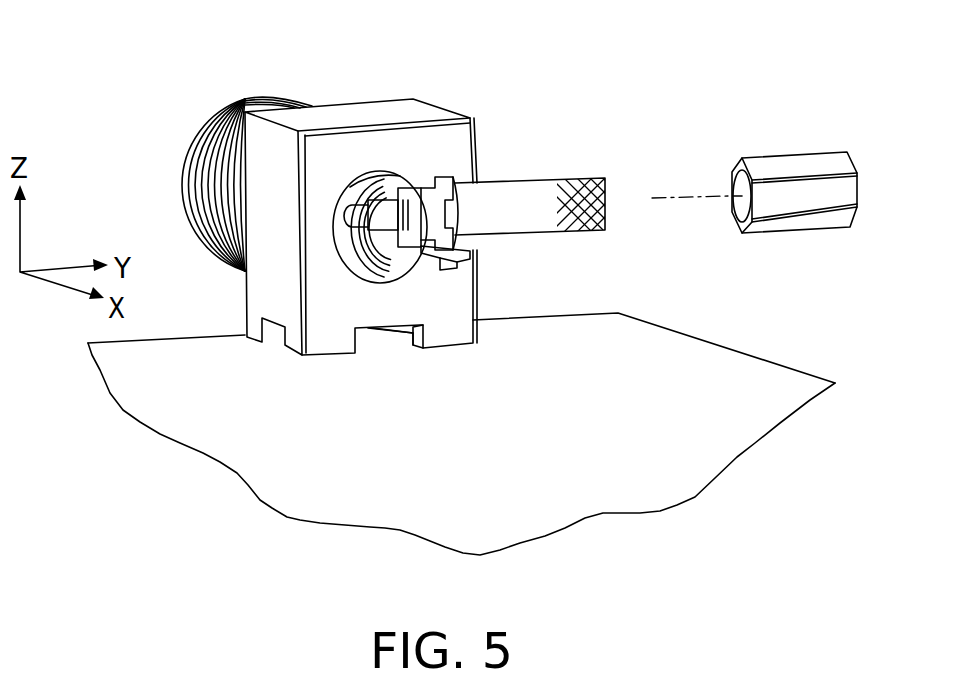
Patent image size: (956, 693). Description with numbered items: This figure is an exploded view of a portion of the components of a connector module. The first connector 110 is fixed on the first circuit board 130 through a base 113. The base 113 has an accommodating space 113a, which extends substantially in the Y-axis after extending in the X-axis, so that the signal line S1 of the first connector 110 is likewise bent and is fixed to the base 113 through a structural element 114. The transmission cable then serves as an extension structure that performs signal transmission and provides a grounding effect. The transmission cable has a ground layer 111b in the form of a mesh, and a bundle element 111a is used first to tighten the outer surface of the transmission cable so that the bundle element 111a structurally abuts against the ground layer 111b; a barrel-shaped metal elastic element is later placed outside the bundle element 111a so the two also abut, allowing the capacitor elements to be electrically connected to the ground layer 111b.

The first connector 110 is at (281, 240).
The base 113 is at (260, 289).
The accommodating space 113a is at (380, 257).
The signal line S1 is at (353, 185).
The structural element 114 is at (428, 210).
The ground layer 111b is at (583, 200).
The bundle element 111a is at (802, 165).
The first circuit board 130 is at (683, 357).